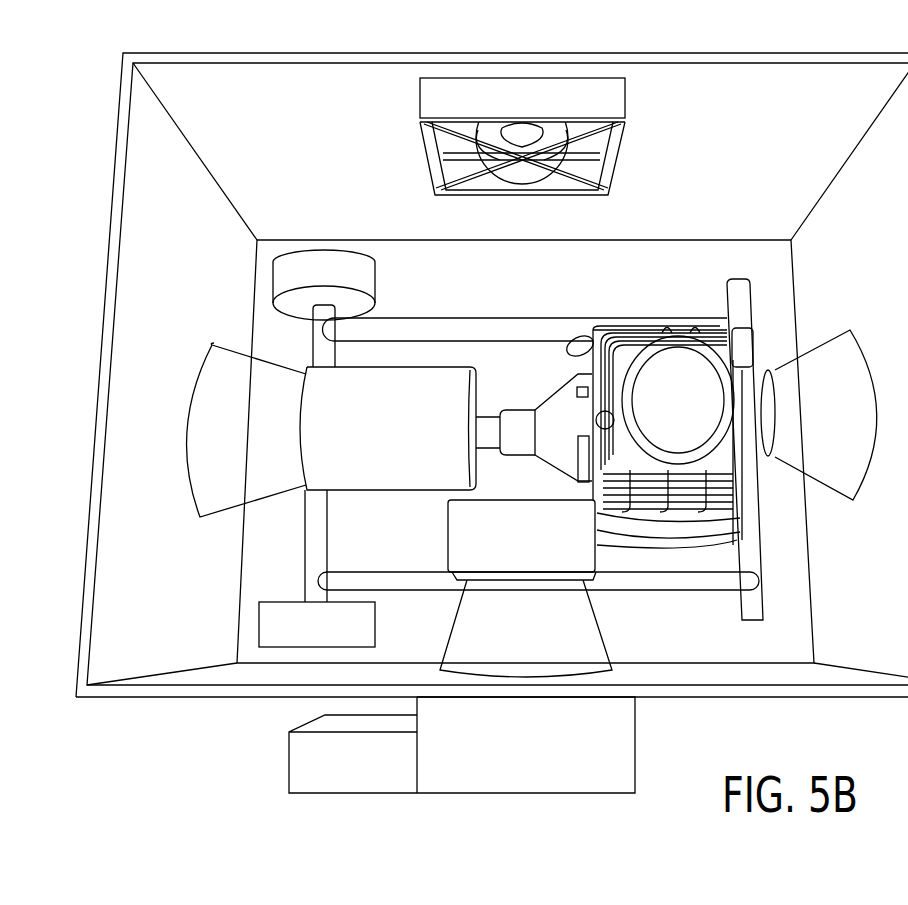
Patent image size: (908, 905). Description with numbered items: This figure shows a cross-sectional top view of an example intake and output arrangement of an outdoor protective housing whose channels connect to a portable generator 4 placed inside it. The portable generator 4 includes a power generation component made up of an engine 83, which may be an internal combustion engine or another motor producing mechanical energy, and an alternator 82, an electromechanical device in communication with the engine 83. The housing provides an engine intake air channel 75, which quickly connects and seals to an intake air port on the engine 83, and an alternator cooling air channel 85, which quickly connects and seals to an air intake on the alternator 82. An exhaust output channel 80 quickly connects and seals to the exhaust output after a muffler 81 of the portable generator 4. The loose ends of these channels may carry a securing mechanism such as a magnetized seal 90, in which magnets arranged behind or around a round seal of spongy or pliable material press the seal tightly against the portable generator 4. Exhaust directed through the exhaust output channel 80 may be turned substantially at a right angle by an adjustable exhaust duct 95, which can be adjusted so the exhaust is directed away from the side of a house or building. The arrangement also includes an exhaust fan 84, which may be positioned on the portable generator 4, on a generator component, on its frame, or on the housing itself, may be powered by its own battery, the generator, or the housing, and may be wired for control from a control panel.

The portable generator 4 is at (521, 312).
The engine intake air channel 75 is at (777, 358).
The exhaust output channel 80 is at (618, 640).
The muffler 81 is at (512, 552).
The alternator 82 is at (410, 447).
The engine 83 is at (665, 419).
The exhaust fan 84 is at (511, 107).
The alternator cooling air channel 85 is at (263, 506).
The magnetized seal 90 is at (306, 373).
The adjustable exhaust duct 95 is at (636, 745).